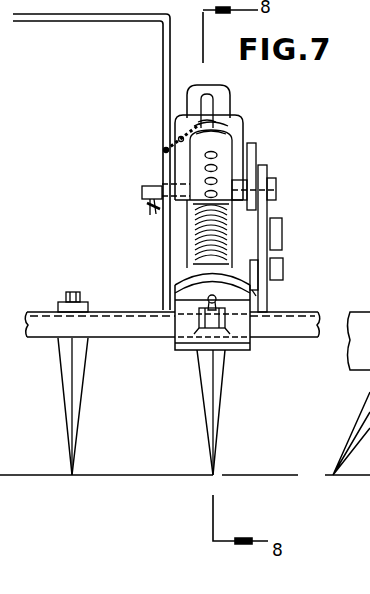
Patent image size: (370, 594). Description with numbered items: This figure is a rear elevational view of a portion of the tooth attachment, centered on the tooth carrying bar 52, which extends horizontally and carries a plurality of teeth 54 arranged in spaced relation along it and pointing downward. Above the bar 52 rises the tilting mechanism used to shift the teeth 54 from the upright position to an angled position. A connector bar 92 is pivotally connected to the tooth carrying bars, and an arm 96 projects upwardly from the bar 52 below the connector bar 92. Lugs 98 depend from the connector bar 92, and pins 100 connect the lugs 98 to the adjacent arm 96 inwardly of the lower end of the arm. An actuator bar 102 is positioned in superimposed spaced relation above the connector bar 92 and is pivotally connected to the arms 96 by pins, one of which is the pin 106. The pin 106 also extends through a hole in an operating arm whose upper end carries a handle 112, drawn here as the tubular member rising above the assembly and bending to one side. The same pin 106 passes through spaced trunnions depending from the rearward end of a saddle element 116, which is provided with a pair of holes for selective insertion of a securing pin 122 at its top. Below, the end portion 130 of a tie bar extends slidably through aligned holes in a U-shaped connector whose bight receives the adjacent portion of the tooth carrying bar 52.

The handle 112 is at (107, 22).
The securing pin 122 is at (218, 106).
The saddle element 116 is at (233, 126).
The actuator bar 102 is at (257, 145).
The arm 96 is at (264, 217).
The connector bar 92 is at (283, 235).
The lug 98 is at (284, 260).
The pin 100 is at (268, 291).
The pin 106 is at (142, 193).
The tooth carrying bar 52 is at (107, 309).
The tooth 54 is at (84, 373).
The end portion of the tie bar 130 is at (183, 356).